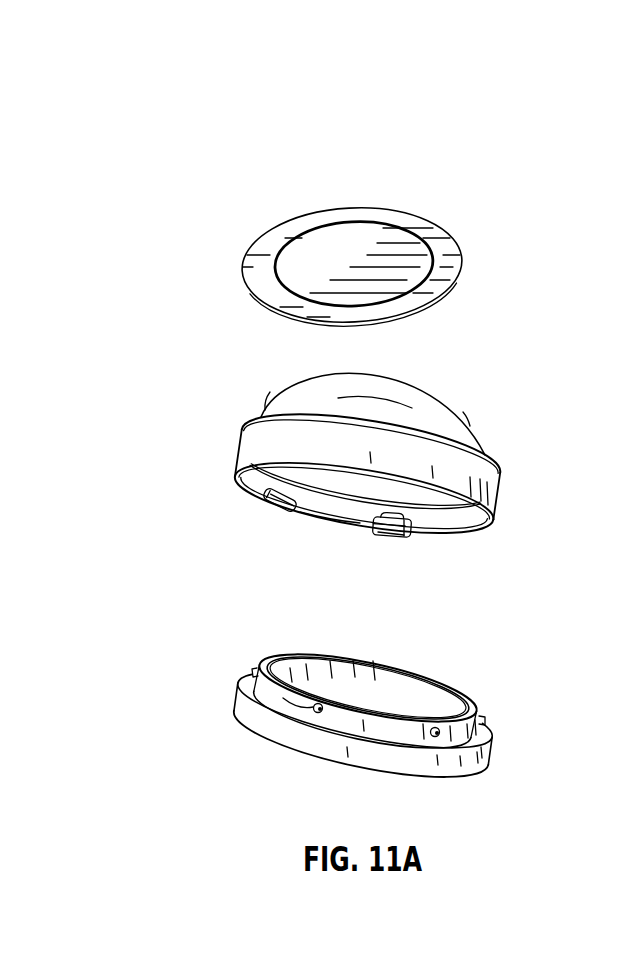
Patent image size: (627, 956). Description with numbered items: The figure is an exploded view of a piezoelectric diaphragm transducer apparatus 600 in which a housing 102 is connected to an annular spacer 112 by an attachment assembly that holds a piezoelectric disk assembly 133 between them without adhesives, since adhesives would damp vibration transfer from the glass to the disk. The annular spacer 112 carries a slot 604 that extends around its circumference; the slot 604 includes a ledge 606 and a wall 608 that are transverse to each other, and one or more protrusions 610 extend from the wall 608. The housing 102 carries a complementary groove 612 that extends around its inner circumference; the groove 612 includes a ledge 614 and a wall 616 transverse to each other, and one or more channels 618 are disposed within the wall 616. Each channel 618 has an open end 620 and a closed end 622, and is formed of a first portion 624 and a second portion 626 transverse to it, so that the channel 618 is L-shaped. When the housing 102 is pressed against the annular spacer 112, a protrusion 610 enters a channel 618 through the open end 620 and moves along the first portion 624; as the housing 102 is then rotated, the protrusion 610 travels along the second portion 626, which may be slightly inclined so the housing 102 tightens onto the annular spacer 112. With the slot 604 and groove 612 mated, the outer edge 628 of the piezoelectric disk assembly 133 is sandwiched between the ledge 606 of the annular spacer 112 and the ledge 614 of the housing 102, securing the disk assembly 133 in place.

The piezoelectric diaphragm transducer apparatus 600 is at (512, 172).
The piezoelectric disk assembly 133 is at (400, 192).
The outer edge 628 is at (453, 261).
The housing 102 is at (410, 397).
The open end 620 is at (442, 580).
The groove 612 is at (285, 533).
The second portion 626 is at (405, 505).
The wall 616 is at (322, 513).
The ledge 614 is at (266, 503).
The closed end 622 is at (377, 527).
The channel 618 is at (400, 540).
The first portion 624 is at (410, 538).
The slot 604 is at (536, 678).
The annular spacer 112 is at (267, 736).
The wall 608 is at (397, 732).
The protrusion 610 is at (256, 671).
The ledge 606 is at (477, 712).